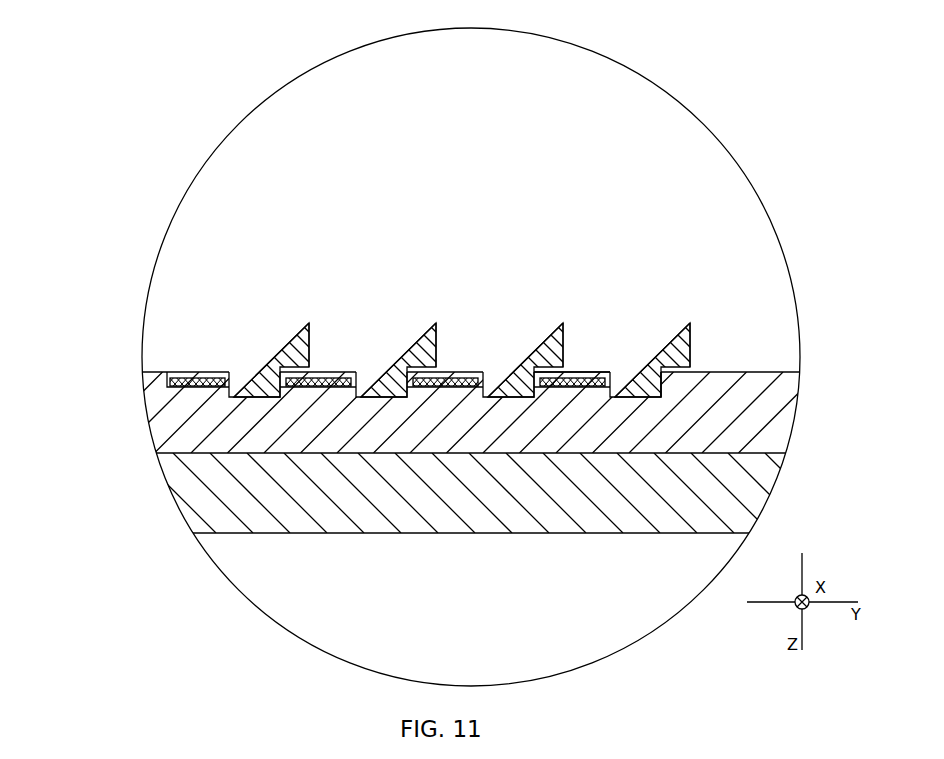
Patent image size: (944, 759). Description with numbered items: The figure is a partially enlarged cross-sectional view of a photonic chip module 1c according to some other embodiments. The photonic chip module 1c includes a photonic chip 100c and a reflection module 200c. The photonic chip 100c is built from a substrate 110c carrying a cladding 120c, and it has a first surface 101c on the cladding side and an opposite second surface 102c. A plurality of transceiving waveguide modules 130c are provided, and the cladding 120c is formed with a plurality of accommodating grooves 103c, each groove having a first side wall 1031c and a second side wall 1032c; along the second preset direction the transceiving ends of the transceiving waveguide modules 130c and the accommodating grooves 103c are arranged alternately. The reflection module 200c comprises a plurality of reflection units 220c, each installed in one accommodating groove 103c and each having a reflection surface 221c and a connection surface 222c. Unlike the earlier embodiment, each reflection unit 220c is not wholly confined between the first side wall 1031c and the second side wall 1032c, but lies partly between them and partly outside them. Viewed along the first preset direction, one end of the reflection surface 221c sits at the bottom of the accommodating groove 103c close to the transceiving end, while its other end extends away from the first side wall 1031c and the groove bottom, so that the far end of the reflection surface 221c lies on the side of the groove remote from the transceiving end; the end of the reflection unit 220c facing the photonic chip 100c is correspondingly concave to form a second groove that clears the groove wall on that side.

The photonic chip module 1c is at (86, 42).
The photonic chip 100c is at (458, 481).
The first surface 101c is at (197, 370).
The second surface 102c is at (252, 534).
The accommodating groove 103c is at (467, 357).
The first side wall 1031c is at (600, 375).
The second side wall 1032c is at (668, 382).
The substrate 110c is at (210, 467).
The cladding 120c is at (198, 422).
The transceiving waveguide module 130c is at (177, 382).
The reflection module 200c is at (493, 361).
The reflection unit 220c is at (493, 361).
The reflection surface 221c is at (426, 350).
The connection surface 222c is at (387, 383).